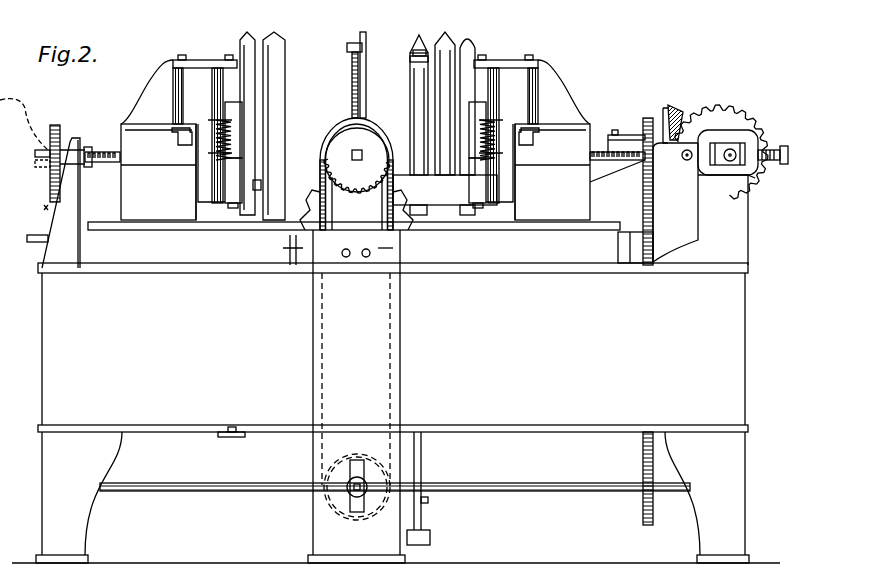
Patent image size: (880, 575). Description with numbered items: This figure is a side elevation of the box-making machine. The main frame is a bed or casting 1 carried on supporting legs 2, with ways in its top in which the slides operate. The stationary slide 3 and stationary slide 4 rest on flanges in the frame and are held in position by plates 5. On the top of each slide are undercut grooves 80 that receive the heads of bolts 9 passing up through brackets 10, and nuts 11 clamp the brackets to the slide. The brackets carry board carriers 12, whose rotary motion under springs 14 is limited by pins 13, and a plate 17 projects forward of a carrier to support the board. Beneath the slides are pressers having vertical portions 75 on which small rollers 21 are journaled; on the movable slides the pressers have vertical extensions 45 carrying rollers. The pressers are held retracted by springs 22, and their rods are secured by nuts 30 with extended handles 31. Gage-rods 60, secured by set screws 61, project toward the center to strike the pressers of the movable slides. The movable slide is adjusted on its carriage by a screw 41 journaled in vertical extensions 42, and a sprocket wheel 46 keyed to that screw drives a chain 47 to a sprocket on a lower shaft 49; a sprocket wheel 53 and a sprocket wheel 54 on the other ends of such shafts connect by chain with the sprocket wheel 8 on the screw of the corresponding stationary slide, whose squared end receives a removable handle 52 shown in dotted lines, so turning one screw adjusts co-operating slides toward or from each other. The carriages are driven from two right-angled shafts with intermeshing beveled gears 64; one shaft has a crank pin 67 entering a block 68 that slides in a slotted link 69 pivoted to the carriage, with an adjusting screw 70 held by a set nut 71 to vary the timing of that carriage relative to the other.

The bed 1 is at (393, 347).
The supporting legs 2 is at (392, 396).
The stationary slide 3 is at (355, 172).
The stationary slide 4 is at (398, 174).
The plates 5 is at (155, 232).
The sprocket wheel 8 is at (58, 125).
The bolts 9 is at (182, 55).
The brackets 10 is at (412, 100).
The nuts 11 is at (190, 60).
The board carriers 12 is at (225, 95).
The pins 13 is at (222, 90).
The springs 14 is at (355, 140).
The plate 17 is at (261, 183).
The rollers 21 is at (265, 40).
The springs 22 is at (447, 40).
The nuts 30 is at (229, 55).
The extended handles 31 is at (246, 434).
The screw 41 is at (606, 142).
The vertical extensions 42 is at (700, 204).
The vertical extensions 45 is at (366, 42).
The sprocket wheel 46 is at (650, 118).
The chain 47 is at (643, 450).
The shaft 49 is at (570, 492).
The removable handle 52 is at (33, 140).
The sprocket wheel 53 is at (50, 212).
The sprocket wheel 54 is at (392, 352).
The gage-rods 60 is at (36, 242).
The set screws 61 is at (290, 243).
The beveled gears 64 is at (676, 108).
The crank pin 67 is at (755, 176).
The block 68 is at (730, 162).
The slotted link 69 is at (712, 175).
The adjusting screw 70 is at (788, 150).
The set nut 71 is at (765, 150).
The vertical portions 75 is at (283, 84).
The undercut grooves 80 is at (176, 145).